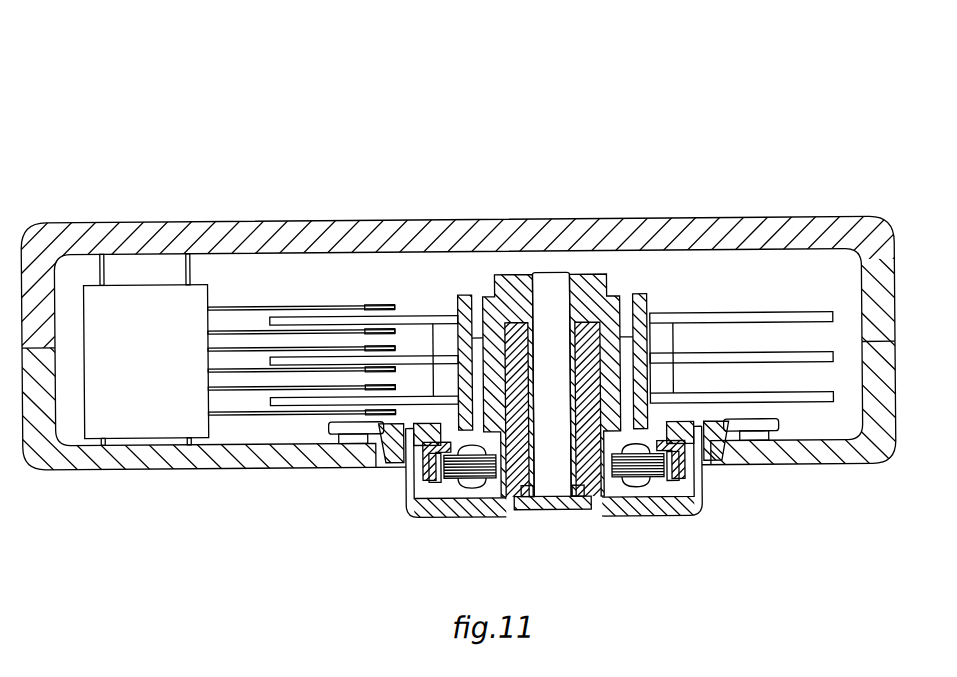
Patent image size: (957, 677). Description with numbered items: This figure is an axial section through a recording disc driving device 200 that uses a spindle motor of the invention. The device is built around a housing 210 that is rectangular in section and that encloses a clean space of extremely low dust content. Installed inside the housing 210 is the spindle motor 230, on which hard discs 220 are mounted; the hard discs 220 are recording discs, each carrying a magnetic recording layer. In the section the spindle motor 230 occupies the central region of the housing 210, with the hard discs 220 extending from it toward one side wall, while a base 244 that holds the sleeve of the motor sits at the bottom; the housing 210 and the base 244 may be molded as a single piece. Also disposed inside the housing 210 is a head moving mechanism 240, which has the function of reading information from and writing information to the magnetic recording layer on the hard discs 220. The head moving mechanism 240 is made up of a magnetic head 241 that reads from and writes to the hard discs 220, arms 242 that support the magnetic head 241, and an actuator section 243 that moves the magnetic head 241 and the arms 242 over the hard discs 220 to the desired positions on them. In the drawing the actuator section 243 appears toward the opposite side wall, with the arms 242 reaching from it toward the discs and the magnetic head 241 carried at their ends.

The recording disc driving device 200 is at (478, 345).
The housing 210 is at (843, 234).
The hard discs 220 is at (783, 318).
The spindle motor 230 is at (570, 520).
The head moving mechanism 240 is at (77, 300).
The magnetic head 241 is at (400, 310).
The arms 242 is at (250, 309).
The actuator section 243 is at (160, 315).
The base 244 is at (693, 505).